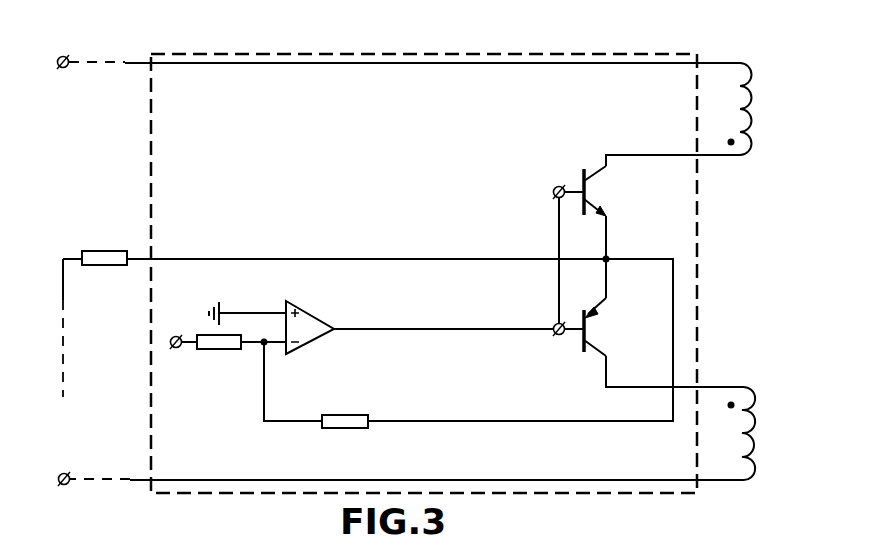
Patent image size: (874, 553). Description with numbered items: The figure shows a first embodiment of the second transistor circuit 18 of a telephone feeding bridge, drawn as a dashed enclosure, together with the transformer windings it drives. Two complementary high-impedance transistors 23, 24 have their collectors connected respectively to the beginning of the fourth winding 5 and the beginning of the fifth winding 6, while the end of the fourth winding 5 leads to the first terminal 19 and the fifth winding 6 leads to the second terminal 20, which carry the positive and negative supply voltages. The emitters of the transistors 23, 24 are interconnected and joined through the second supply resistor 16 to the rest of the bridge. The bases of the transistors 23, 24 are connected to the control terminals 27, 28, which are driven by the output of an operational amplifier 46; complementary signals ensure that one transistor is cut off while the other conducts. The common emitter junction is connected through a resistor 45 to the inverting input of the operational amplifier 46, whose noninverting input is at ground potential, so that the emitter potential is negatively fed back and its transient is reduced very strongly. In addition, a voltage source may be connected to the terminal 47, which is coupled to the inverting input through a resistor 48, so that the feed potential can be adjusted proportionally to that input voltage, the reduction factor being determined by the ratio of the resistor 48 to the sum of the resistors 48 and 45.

The fourth winding 5 is at (740, 90).
The fifth winding 6 is at (740, 433).
The second supply resistor 16 is at (103, 250).
The second transistor circuit 18 is at (677, 493).
The first terminal 19 is at (67, 66).
The second terminal 20 is at (69, 474).
The transistor 23 is at (580, 172).
The transistor 24 is at (583, 310).
The control terminal 27 is at (553, 188).
The control terminal 28 is at (553, 334).
The resistor 45 is at (345, 412).
The operational amplifier 46 is at (322, 318).
The terminal 47 is at (182, 350).
The resistor 48 is at (226, 350).